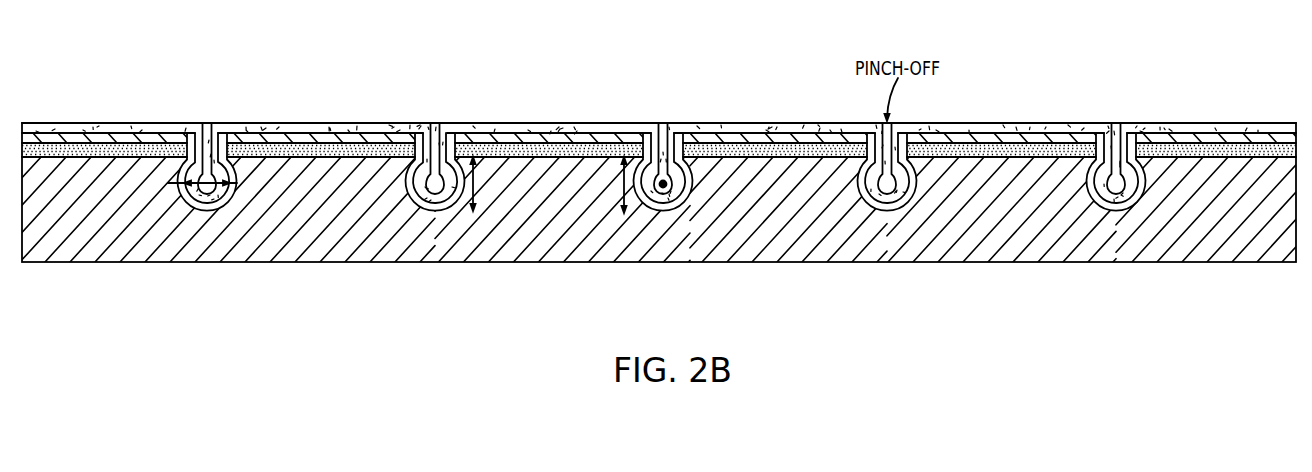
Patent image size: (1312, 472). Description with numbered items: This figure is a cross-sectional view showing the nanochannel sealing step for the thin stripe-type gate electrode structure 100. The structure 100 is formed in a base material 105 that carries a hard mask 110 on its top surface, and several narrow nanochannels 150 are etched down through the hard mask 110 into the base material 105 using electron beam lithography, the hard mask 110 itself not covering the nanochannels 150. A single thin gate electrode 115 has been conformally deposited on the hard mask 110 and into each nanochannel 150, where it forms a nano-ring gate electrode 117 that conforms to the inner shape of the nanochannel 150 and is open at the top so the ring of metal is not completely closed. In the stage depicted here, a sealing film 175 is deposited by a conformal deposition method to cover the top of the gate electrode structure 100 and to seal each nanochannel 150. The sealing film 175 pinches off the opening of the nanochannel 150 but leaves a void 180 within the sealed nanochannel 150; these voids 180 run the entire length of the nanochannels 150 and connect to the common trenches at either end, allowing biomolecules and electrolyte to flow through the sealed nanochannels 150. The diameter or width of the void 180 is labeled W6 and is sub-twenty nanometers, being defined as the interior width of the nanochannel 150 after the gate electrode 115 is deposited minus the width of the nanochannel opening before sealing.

The thin stripe-type gate electrode structure 100 is at (555, 72).
The base material 105 is at (127, 175).
The hard mask 110 is at (58, 150).
The single thin gate electrode 115 is at (90, 137).
The nano-ring gate electrode 117 is at (632, 183).
The nanochannel 150 is at (238, 198).
The sealing film 175 is at (152, 125).
The void 180 is at (665, 190).
The diameter/width of the void W6 is at (191, 184).